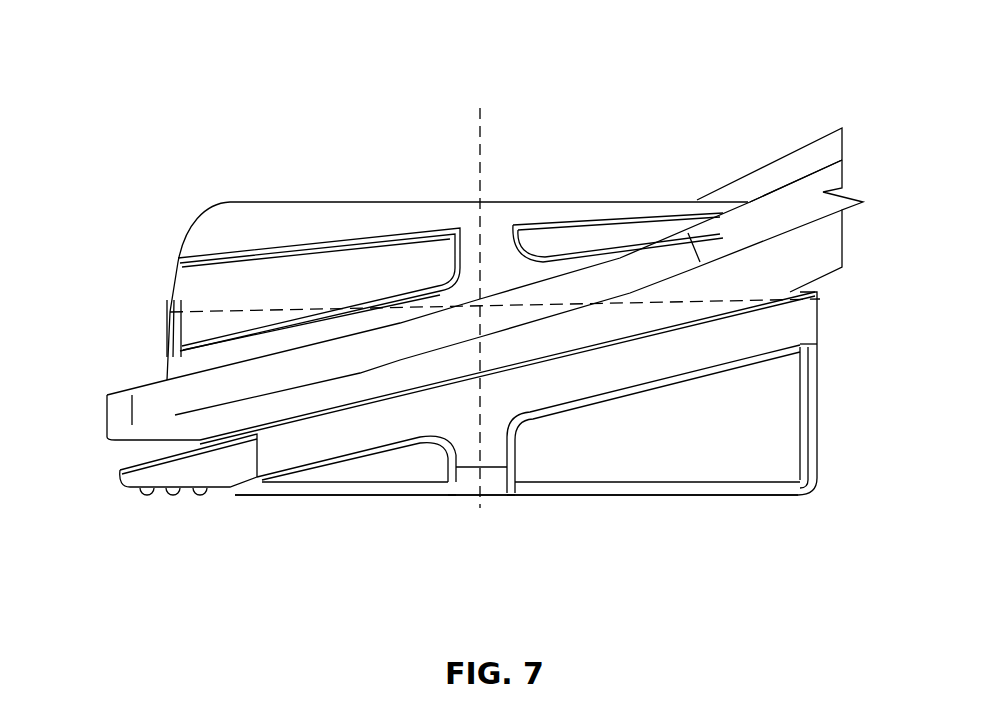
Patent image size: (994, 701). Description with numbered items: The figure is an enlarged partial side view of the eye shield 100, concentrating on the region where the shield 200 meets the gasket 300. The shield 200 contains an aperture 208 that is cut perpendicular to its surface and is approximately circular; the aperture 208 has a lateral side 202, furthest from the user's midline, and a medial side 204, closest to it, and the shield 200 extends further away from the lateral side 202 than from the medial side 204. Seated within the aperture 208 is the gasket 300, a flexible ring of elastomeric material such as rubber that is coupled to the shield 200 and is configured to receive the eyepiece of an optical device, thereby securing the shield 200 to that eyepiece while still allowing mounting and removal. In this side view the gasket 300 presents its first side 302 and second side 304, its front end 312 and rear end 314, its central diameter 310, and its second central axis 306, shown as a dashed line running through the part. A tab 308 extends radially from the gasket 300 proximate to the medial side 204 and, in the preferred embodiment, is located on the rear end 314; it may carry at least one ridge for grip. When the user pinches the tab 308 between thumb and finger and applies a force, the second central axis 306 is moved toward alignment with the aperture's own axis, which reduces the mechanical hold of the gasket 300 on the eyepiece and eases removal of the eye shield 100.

The eye shield 100 is at (126, 72).
The shield 200 is at (110, 415).
The lateral side 202 is at (633, 302).
The medial side 204 is at (207, 440).
The aperture 208 is at (700, 315).
The gasket 300 is at (818, 410).
The first side 302 is at (817, 344).
The second side 304 is at (190, 447).
The second central axis 306 is at (477, 115).
The tab 308 is at (137, 493).
The central diameter 310 is at (397, 306).
The front end 312 is at (663, 207).
The rear end 314 is at (590, 498).